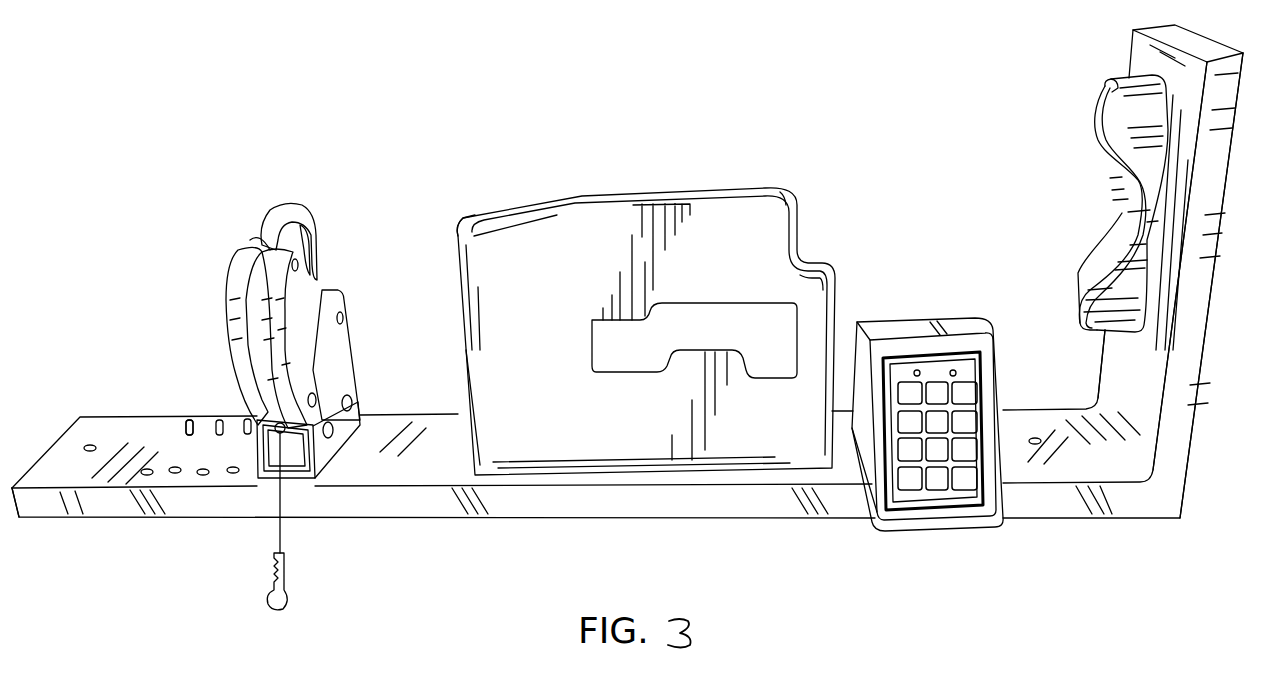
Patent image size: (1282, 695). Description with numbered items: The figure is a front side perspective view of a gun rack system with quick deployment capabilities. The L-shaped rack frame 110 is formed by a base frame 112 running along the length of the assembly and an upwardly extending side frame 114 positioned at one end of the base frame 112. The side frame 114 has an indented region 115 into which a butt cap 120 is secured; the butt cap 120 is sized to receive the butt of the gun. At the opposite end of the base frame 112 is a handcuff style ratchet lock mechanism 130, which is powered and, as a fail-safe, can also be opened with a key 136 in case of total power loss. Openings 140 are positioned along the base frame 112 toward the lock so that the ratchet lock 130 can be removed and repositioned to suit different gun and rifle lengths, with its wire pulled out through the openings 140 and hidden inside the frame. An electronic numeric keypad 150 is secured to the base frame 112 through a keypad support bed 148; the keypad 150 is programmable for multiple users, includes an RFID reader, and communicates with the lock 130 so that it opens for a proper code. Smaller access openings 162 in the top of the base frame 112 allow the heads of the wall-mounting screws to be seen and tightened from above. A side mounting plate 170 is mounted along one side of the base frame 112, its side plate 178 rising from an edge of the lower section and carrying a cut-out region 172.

The rack frame 110 is at (813, 515).
The base frame 112 is at (627, 510).
The side frame 114 is at (1173, 473).
The indented region 115 is at (493, 480).
The butt cap 120 is at (1103, 92).
The handcuff style ratchet lock mechanism 130 is at (230, 270).
The key 136 is at (290, 603).
The openings 140 is at (188, 433).
The keypad support bed 148 is at (954, 431).
The electronic numeric keypad 150 is at (953, 508).
The access openings 162 is at (92, 440).
The side mounting plate 170 is at (762, 200).
The cut-out region 172 is at (670, 308).
The side plate 178 is at (478, 248).